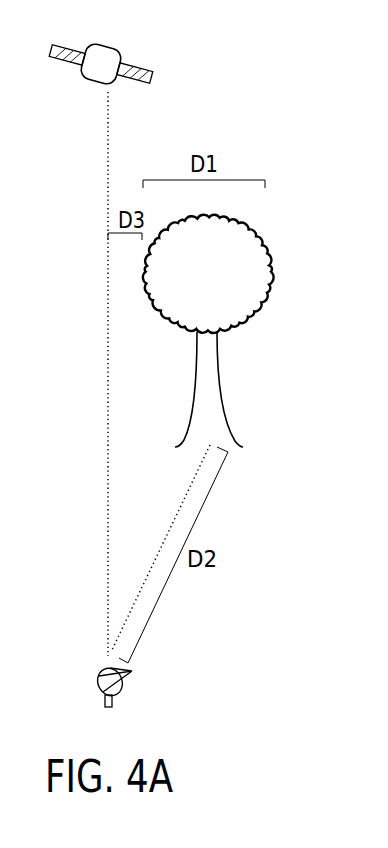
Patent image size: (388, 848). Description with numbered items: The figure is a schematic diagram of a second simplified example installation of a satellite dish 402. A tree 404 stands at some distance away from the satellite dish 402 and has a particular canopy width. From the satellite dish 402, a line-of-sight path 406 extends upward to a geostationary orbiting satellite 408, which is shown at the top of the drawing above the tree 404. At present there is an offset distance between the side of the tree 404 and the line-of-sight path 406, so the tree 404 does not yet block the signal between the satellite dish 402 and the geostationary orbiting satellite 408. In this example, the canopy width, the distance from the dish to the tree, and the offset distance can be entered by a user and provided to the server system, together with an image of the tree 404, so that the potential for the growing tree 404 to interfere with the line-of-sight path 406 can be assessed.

The satellite dish 402 is at (132, 671).
The tree 404 is at (273, 258).
The line-of-sight path 406 is at (108, 217).
The geostationary orbiting satellite 408 is at (102, 48).